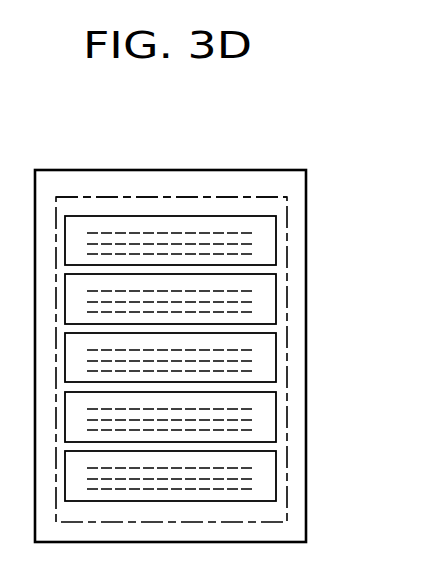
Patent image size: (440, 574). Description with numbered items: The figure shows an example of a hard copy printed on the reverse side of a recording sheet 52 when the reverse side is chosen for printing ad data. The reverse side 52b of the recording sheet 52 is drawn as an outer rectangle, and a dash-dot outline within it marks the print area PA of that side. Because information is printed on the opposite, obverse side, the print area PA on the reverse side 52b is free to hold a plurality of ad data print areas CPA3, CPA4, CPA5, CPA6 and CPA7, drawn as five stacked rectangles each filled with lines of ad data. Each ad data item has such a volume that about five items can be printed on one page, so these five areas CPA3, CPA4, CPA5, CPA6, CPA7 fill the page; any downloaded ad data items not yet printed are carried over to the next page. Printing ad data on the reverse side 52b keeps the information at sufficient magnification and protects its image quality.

The recording sheet 52 is at (198, 169).
The reverse side 52b is at (77, 187).
The print area PA is at (290, 196).
The ad data print area CPA3 is at (276, 248).
The ad data print area CPA4 is at (276, 306).
The ad data print area CPA5 is at (276, 368).
The ad data print area CPA6 is at (276, 427).
The ad data print area CPA7 is at (276, 485).